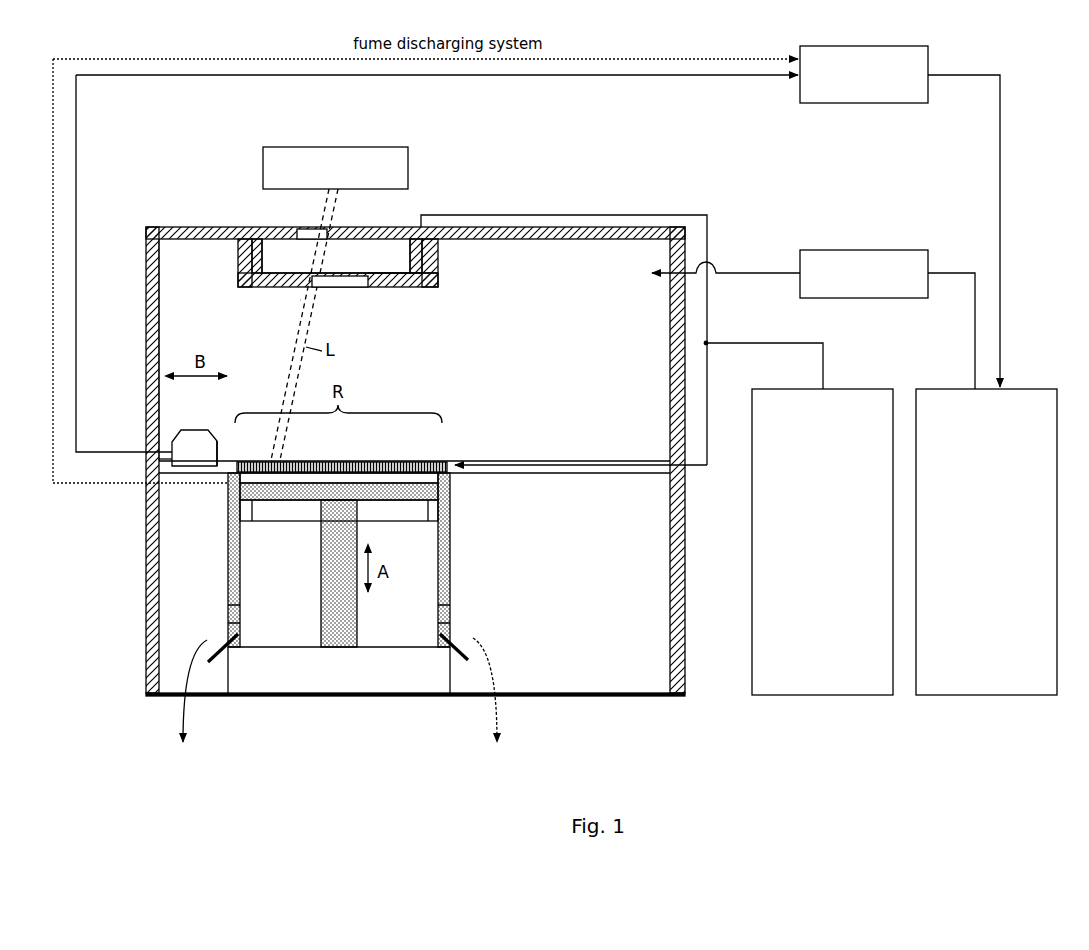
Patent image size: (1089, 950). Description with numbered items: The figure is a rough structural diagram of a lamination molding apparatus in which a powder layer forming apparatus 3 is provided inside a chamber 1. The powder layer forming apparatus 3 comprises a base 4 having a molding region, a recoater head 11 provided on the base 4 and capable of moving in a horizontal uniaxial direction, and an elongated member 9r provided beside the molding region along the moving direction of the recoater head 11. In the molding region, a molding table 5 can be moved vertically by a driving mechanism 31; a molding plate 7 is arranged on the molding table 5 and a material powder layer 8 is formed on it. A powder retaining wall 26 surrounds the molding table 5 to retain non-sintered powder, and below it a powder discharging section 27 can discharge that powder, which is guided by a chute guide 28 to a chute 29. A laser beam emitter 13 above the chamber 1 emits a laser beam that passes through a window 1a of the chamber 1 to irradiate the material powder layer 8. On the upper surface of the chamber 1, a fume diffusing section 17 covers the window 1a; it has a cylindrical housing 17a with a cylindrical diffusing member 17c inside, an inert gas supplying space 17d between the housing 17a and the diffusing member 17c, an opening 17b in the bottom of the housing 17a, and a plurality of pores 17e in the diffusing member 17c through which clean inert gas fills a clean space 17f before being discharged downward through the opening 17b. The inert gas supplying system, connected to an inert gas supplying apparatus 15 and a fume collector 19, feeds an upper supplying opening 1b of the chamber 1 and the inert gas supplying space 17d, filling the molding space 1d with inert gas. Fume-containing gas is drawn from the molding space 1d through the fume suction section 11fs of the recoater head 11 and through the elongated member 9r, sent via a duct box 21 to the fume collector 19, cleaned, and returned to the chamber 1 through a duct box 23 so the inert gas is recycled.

The chamber 1 is at (183, 227).
The window 1a is at (313, 238).
The upper supplying opening 1b is at (662, 283).
The molding space 1d is at (414, 350).
The powder layer forming apparatus 3 is at (506, 440).
The base 4 is at (621, 474).
The molding table 5 is at (437, 493).
The molding plate 7 is at (375, 484).
The material powder layer 8 is at (447, 478).
The elongated member 9r is at (386, 462).
The recoater head 11 is at (190, 430).
The fume suction section 11fs is at (217, 440).
The laser beam emitter 13 is at (390, 145).
The inert gas supplying apparatus 15 is at (840, 389).
The fume diffusing section 17 is at (454, 300).
The housing 17a is at (440, 255).
The opening 17b is at (354, 292).
The diffusing member 17c is at (410, 258).
The inert gas supplying space 17d is at (420, 288).
The pores 17e is at (403, 248).
The clean space 17f is at (287, 266).
The fume collector 19 is at (1030, 389).
The duct box 21 is at (883, 46).
The duct box 23 is at (883, 250).
The powder retaining wall 26 is at (230, 573).
The powder discharging section 27 is at (225, 622).
The chute guide 28 is at (212, 690).
The chute 29 is at (344, 767).
The driving mechanism 31 is at (360, 650).